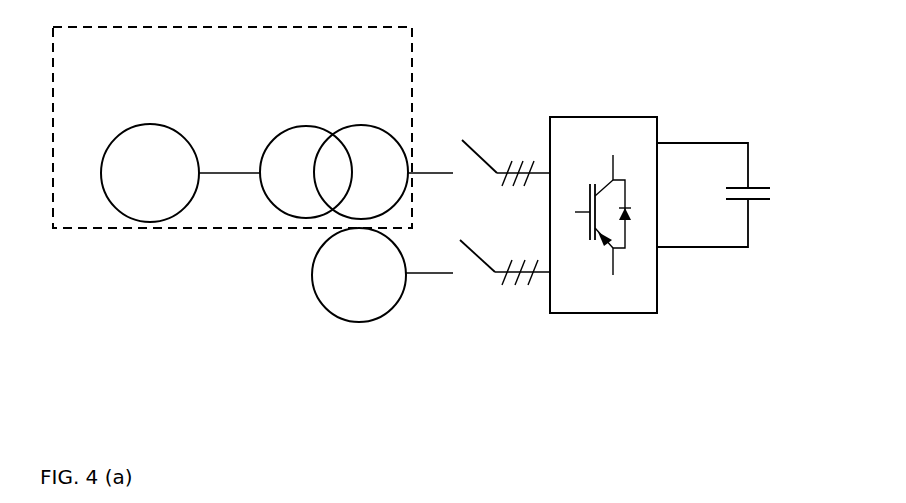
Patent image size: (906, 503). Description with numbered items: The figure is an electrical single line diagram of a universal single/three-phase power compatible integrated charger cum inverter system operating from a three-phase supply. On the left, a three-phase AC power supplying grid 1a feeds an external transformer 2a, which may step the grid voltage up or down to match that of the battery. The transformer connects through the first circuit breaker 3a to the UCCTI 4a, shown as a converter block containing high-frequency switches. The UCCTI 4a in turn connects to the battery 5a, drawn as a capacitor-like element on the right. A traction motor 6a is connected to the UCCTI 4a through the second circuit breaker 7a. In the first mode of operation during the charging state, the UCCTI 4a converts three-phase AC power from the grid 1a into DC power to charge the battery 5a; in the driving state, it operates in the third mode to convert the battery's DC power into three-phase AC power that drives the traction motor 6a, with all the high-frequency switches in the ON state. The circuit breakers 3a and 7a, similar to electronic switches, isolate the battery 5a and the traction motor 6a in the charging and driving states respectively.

The three-phase AC power supplying grid 1a is at (147, 110).
The external transformer 2a is at (315, 117).
The first circuit breaker CB1 3a is at (478, 135).
The UCCTI 4a is at (618, 103).
The battery 5a is at (745, 113).
The traction motor 6a is at (312, 292).
The second circuit breaker CB2 7a is at (453, 312).